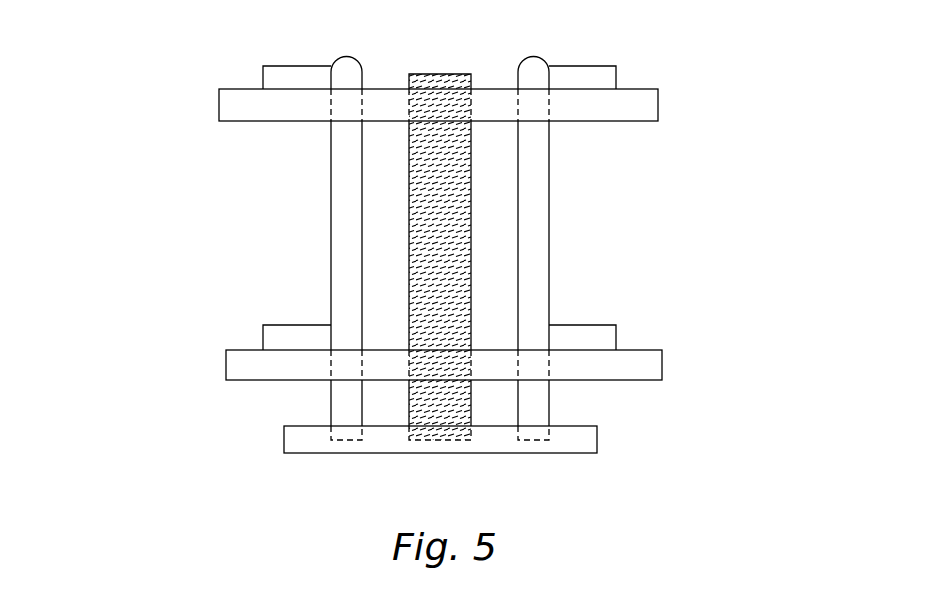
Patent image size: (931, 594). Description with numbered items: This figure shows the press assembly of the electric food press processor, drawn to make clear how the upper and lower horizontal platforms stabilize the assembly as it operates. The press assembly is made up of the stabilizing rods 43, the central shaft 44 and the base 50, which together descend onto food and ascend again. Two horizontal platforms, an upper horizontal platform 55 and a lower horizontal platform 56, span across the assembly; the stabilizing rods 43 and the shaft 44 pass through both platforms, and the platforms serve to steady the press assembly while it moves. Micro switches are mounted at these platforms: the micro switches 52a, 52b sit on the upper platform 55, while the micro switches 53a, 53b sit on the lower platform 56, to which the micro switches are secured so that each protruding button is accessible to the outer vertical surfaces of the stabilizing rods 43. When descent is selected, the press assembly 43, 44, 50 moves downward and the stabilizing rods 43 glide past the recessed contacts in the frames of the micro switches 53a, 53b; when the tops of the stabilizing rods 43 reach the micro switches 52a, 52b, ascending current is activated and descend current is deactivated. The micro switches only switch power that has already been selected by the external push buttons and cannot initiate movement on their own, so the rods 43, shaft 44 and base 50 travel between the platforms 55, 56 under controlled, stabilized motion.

The stabilizing rods 43 is at (340, 278).
The press assembly shaft 44 is at (438, 165).
The press assembly base 50 is at (318, 428).
The micro switch 52a is at (295, 80).
The micro switch 52b is at (570, 80).
The micro switch 53a is at (308, 338).
The micro switch 53b is at (573, 336).
The horizontal platform 55 is at (590, 111).
The horizontal platform 56 is at (605, 368).